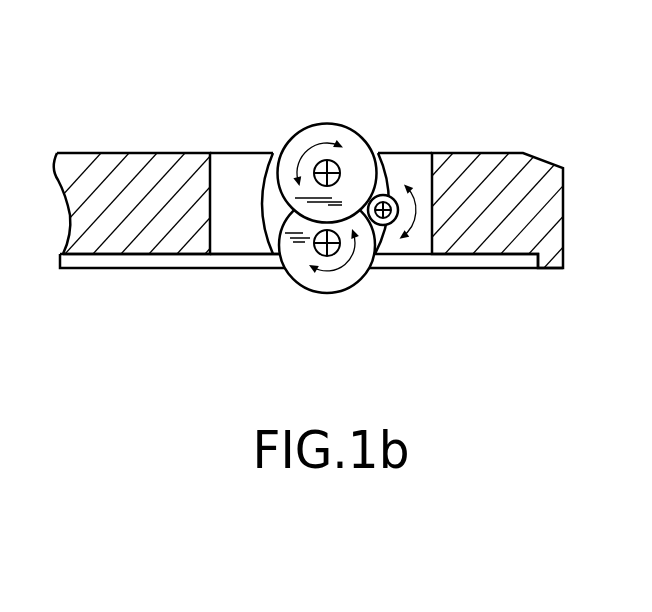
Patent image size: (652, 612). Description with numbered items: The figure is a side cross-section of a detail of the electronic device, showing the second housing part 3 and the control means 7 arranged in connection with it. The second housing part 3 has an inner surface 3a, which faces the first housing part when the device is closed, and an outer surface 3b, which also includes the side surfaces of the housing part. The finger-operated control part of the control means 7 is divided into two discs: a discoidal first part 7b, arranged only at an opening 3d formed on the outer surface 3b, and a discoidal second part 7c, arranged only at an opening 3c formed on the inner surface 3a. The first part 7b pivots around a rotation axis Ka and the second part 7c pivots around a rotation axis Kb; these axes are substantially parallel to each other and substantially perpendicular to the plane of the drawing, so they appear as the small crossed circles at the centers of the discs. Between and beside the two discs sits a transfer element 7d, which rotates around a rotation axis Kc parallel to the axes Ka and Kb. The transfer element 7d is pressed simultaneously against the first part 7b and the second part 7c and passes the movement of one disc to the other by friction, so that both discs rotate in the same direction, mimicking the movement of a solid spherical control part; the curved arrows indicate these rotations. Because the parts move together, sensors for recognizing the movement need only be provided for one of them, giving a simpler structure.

The second housing part 3 is at (110, 172).
The inner surface 3a is at (103, 258).
The outer surface 3b is at (152, 155).
The opening 3c is at (252, 280).
The opening 3d is at (237, 132).
The control means 7 is at (391, 205).
The first part 7b is at (334, 146).
The second part 7c is at (327, 272).
The transfer element 7d is at (446, 219).
The rotation axis Ka is at (327, 173).
The rotation axis Kb is at (327, 243).
The rotation axis Kc is at (383, 210).